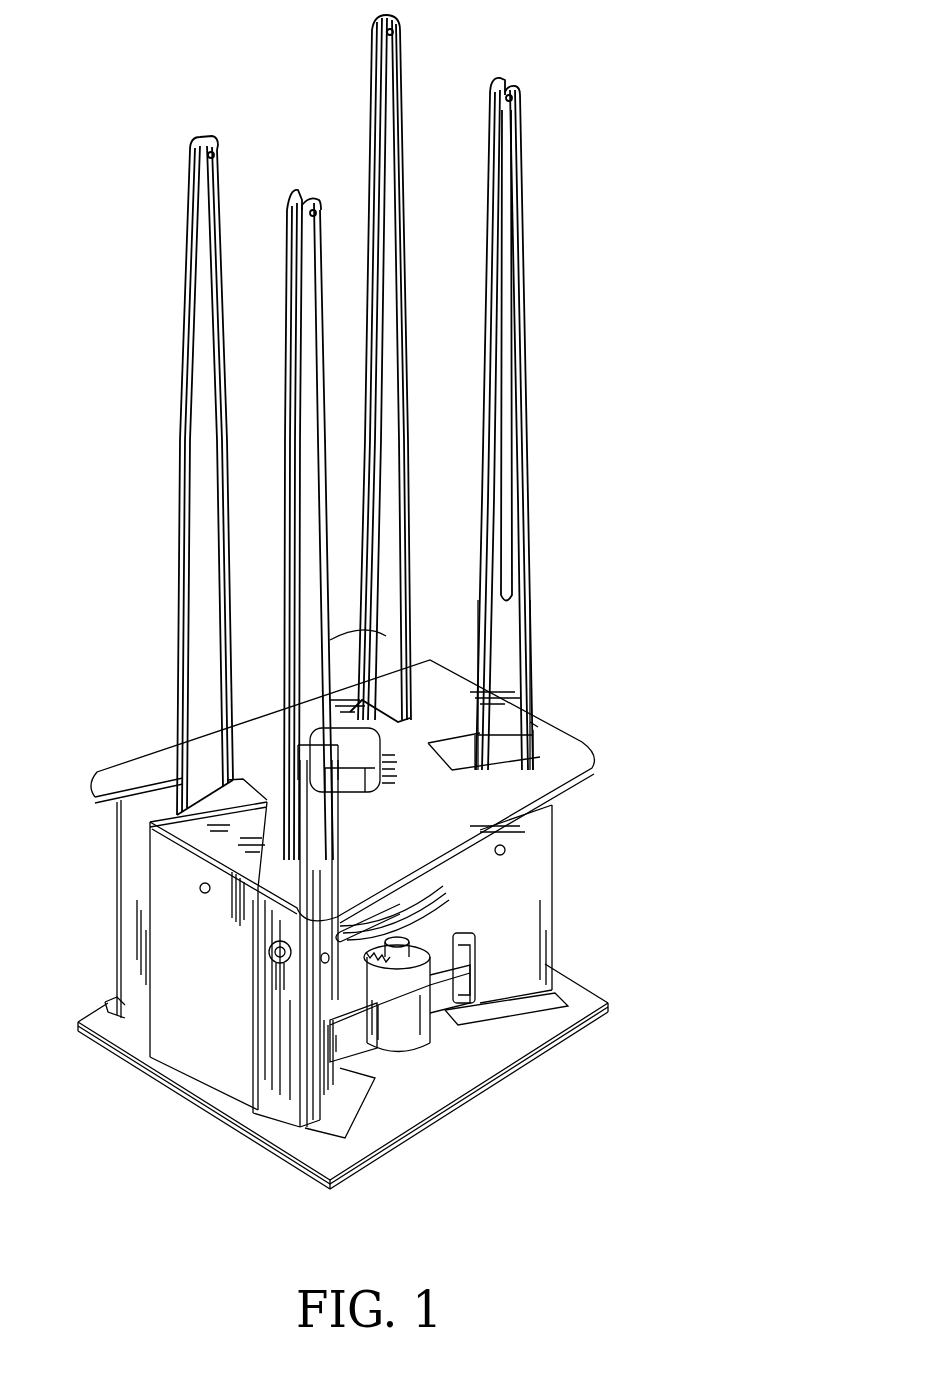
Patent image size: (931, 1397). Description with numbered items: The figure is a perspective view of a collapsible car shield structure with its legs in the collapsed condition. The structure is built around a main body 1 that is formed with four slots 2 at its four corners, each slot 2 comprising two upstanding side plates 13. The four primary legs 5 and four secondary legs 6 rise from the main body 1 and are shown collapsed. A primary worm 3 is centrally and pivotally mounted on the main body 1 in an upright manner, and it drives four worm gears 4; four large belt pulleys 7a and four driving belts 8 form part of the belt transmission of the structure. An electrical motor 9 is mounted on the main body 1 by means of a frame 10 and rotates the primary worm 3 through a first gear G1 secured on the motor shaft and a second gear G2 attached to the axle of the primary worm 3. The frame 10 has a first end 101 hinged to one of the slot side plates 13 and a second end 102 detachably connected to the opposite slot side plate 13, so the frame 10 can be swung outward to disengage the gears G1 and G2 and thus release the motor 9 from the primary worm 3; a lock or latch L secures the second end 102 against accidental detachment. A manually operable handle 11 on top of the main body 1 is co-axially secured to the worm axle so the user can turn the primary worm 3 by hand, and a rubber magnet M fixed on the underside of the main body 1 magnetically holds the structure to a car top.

The main body 1 is at (588, 762).
The slot 2 is at (130, 856).
The primary worm 3 is at (437, 887).
The worm gear 4 is at (269, 951).
The primary leg 5 is at (505, 634).
The secondary leg 6 is at (510, 512).
The large belt pulley 7a is at (277, 963).
The driving belt 8 is at (532, 700).
The electrical motor 9 is at (413, 1043).
The frame 10 is at (377, 1033).
The manually operable handle 11 is at (362, 782).
The slot side plate 13 is at (120, 935).
The first end 101 is at (360, 1040).
The second end 102 is at (440, 997).
The first gear G1 is at (440, 938).
The second gear G2 is at (360, 940).
The latch L is at (473, 946).
The rubber magnet M is at (335, 1165).